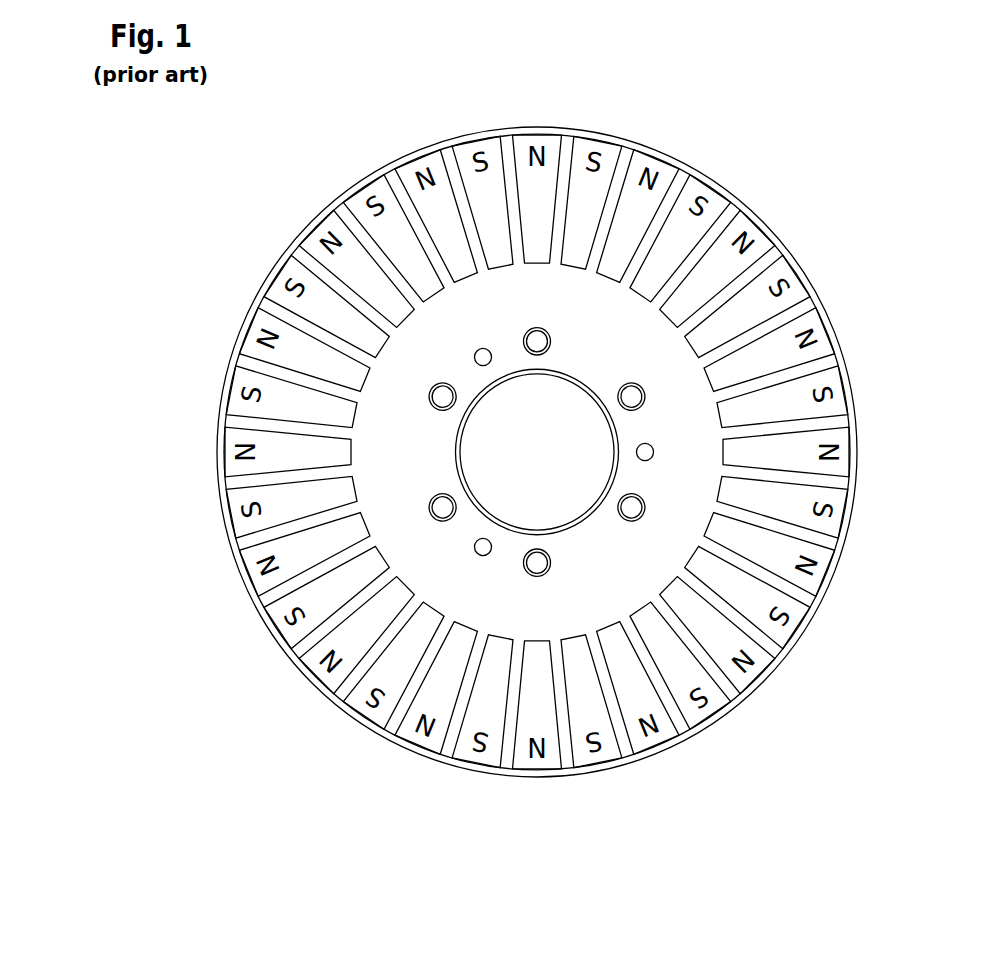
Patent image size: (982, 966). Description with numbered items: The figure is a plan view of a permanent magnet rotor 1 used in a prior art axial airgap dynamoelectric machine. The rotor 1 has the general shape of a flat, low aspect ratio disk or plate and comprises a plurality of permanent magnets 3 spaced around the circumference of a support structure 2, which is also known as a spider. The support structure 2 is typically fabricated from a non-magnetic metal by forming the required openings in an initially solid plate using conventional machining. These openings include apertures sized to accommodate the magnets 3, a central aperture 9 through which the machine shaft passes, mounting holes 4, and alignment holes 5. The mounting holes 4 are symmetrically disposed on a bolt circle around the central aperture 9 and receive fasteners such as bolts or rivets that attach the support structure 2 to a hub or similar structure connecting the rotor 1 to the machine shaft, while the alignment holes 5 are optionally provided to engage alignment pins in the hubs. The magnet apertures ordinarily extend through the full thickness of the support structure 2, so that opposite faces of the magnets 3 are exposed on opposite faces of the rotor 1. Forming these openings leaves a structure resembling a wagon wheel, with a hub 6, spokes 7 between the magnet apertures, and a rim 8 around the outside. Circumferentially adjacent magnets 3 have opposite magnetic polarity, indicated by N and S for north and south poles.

The permanent magnet rotor 1 is at (449, 438).
The support structure 2 is at (537, 452).
The permanent magnets 3 is at (270, 503).
The mounting holes 4 is at (537, 452).
The alignment holes 5 is at (580, 335).
The hub 6 is at (538, 442).
The spokes 7 is at (667, 205).
The rim 8 is at (537, 452).
The central aperture 9 is at (537, 452).